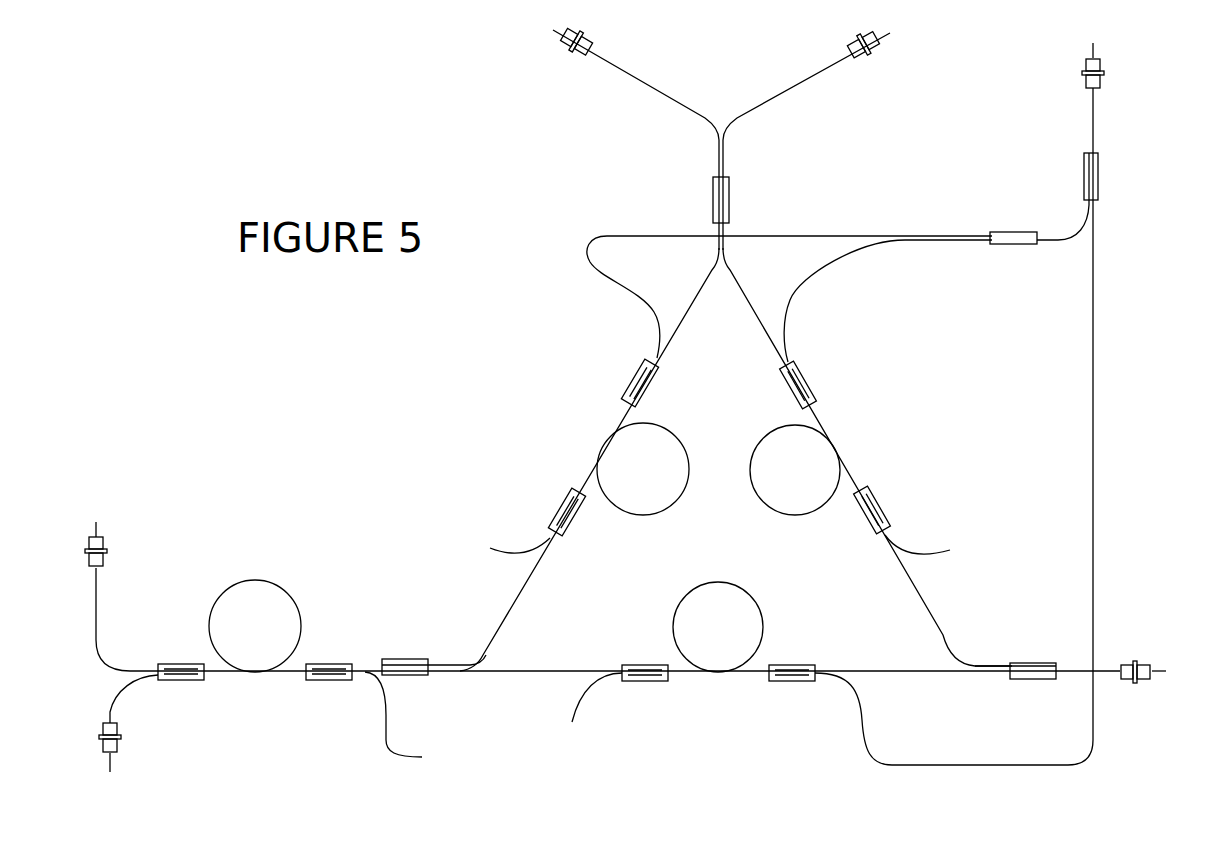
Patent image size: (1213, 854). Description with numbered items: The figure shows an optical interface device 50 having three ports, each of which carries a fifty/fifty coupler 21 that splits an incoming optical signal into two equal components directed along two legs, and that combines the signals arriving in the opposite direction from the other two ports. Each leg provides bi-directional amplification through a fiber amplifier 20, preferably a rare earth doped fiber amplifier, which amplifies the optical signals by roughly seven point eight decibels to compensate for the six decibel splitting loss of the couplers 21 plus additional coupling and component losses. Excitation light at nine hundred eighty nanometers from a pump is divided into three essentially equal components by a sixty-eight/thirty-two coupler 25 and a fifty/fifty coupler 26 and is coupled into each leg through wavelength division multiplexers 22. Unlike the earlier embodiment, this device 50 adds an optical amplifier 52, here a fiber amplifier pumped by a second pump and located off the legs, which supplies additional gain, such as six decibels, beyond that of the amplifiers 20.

The optical interface device 50 is at (476, 334).
The 50/50 coupler 21 is at (728, 197).
The wavelength division multiplexer 22 is at (637, 378).
The fiber amplifier 20 is at (762, 511).
The optical amplifier 52 is at (243, 563).
The 68/32 coupler 25 is at (1083, 165).
The 50/50 coupler 26 is at (1005, 232).